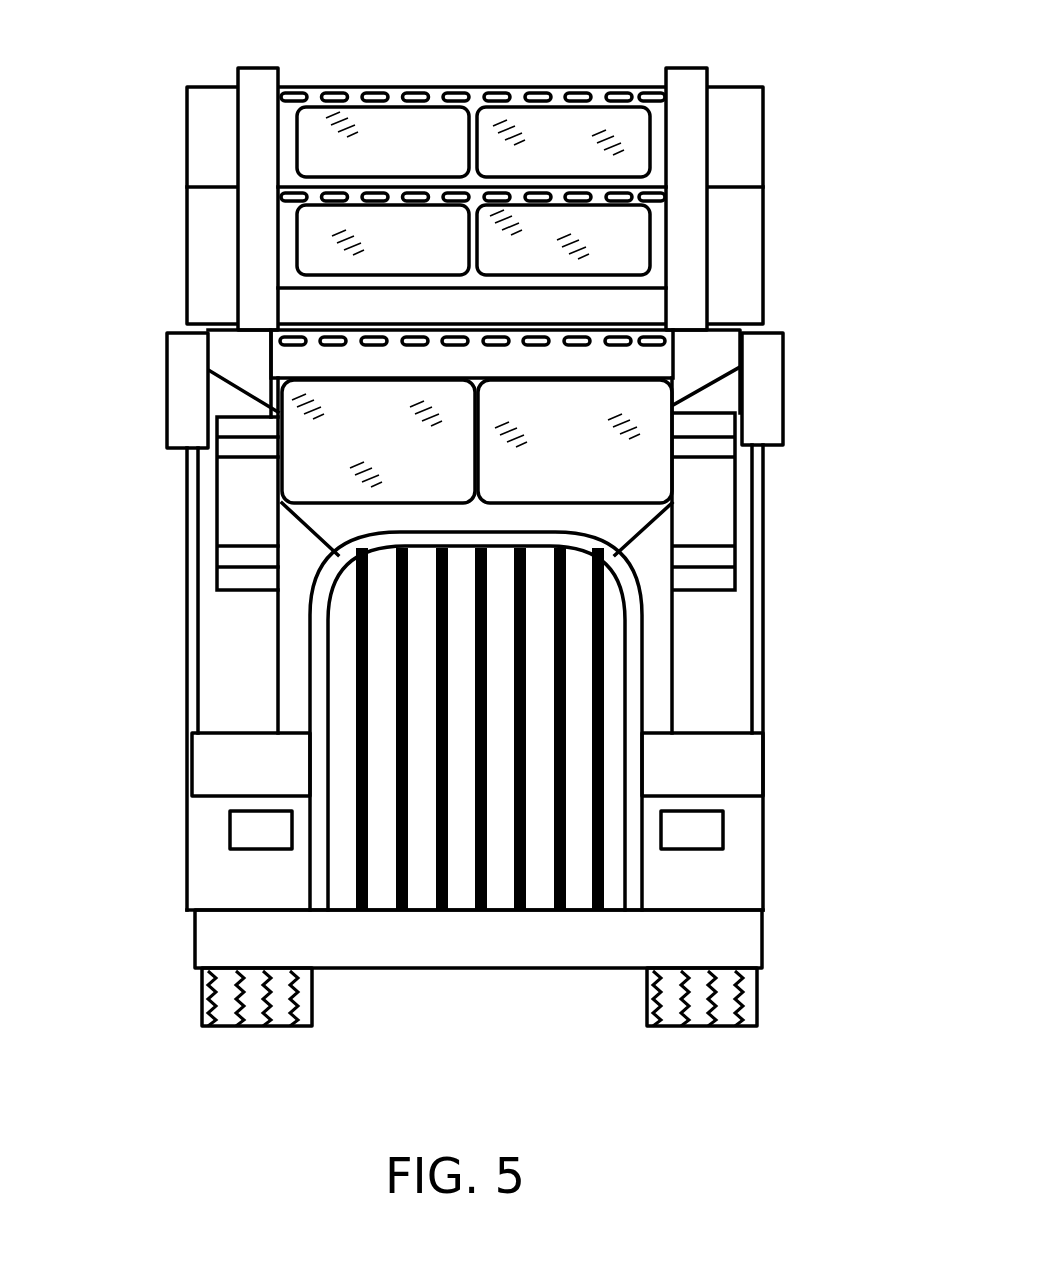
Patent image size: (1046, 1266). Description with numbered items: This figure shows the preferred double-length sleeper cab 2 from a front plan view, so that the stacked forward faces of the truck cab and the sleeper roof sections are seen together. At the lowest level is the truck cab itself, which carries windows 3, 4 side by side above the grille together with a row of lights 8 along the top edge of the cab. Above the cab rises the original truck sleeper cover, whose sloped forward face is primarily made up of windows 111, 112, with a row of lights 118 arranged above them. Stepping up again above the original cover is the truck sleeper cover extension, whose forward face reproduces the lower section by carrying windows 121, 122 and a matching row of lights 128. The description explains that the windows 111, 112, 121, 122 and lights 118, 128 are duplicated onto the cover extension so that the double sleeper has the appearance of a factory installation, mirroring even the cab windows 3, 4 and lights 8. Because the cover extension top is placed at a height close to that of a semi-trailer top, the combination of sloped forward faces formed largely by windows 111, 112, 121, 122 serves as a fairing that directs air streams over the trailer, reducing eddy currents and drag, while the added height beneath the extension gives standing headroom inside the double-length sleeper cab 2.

The double-length sleeper cab 2 is at (107, 41).
The window 3 is at (320, 437).
The window 4 is at (632, 437).
The lights 8 is at (614, 333).
The window 111 is at (317, 262).
The window 112 is at (628, 258).
The lights 118 is at (620, 184).
The window 121 is at (417, 118).
The window 122 is at (498, 118).
The lights 128 is at (652, 90).